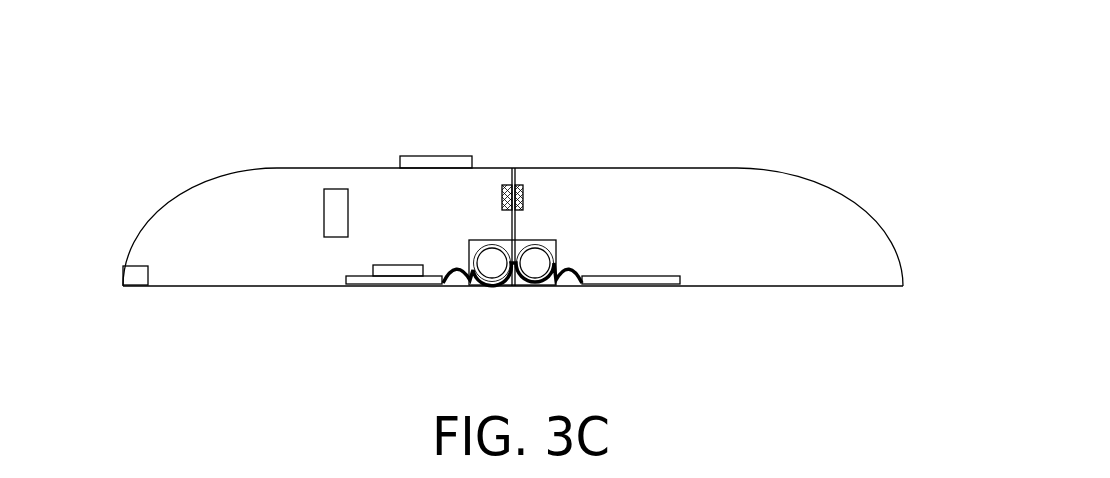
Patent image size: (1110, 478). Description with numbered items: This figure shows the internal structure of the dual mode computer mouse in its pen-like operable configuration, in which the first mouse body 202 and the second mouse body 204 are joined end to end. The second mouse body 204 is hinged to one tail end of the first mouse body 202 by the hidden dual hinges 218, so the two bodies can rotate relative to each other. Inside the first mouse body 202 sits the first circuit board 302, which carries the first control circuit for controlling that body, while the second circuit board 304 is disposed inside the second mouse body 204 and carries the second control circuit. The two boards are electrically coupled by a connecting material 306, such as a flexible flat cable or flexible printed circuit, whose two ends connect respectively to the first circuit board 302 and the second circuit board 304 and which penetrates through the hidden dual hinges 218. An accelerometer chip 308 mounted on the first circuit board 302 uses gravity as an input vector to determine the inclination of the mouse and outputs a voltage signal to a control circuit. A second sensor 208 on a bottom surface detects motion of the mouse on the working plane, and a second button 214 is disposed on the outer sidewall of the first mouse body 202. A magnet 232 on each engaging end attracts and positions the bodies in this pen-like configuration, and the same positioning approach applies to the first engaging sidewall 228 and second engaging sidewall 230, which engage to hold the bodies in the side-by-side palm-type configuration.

The first mouse body 202 is at (279, 158).
The second mouse body 204 is at (797, 160).
The second sensor 208 is at (133, 272).
The second button 214 is at (453, 156).
The hidden dual hinges 218 is at (505, 247).
The first engaging sidewall 228 is at (312, 286).
The second engaging sidewall 230 is at (770, 286).
The magnet 232 is at (503, 186).
The first circuit board 302 is at (420, 286).
The second circuit board 304 is at (620, 284).
The connecting material 306 is at (486, 286).
The accelerometer chip 308 is at (405, 265).